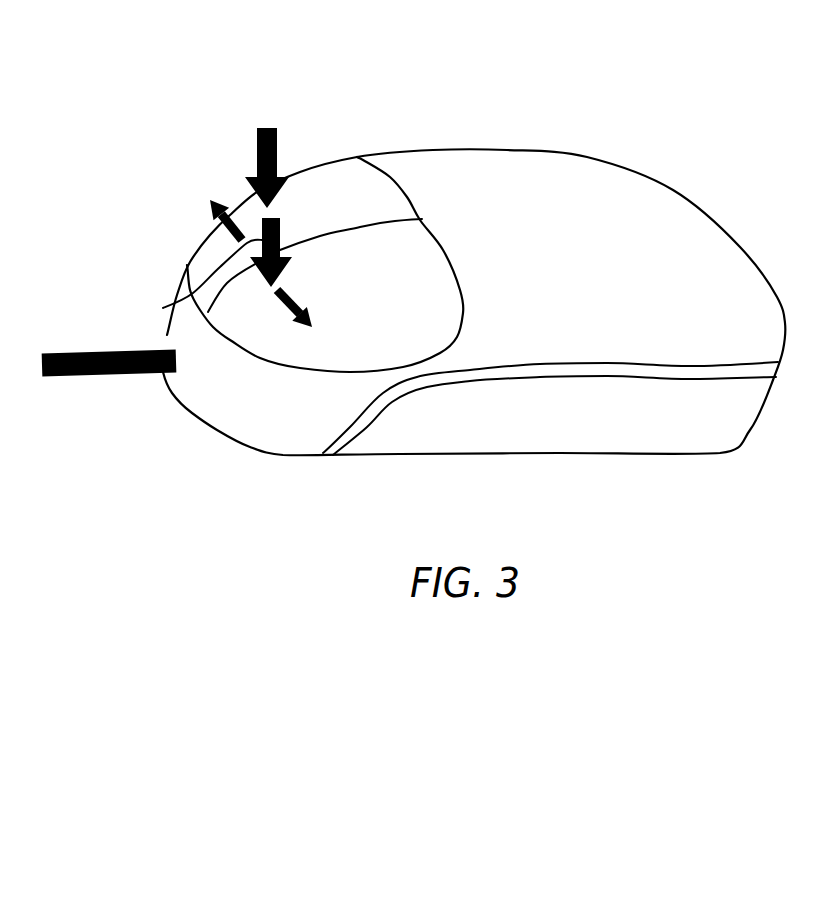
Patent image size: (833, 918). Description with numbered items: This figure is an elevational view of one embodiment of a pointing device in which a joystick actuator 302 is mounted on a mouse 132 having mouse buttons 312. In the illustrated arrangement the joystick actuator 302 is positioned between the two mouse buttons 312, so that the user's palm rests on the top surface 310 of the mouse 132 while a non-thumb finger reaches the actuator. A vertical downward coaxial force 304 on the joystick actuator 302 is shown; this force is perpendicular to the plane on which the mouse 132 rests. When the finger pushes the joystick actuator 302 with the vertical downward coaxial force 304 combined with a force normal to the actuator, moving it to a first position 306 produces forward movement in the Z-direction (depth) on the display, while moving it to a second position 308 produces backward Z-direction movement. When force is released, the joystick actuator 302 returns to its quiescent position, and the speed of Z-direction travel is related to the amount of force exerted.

The mouse 132 is at (435, 428).
The joystick actuator 302 is at (163, 308).
The vertical downward coaxial force 304 is at (184, 189).
The first position 306 is at (315, 286).
The second position 308 is at (98, 266).
The top surface 310 is at (610, 197).
The mouse buttons 312 is at (343, 190).